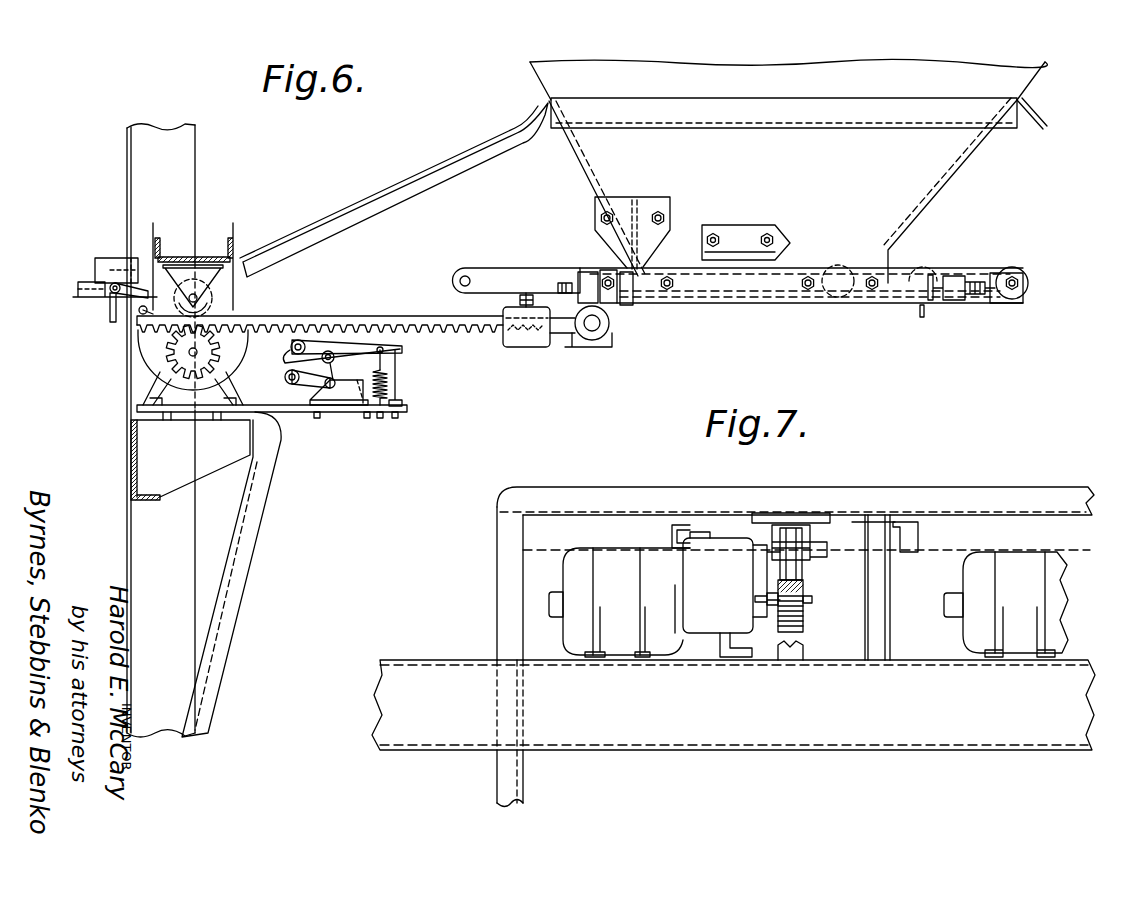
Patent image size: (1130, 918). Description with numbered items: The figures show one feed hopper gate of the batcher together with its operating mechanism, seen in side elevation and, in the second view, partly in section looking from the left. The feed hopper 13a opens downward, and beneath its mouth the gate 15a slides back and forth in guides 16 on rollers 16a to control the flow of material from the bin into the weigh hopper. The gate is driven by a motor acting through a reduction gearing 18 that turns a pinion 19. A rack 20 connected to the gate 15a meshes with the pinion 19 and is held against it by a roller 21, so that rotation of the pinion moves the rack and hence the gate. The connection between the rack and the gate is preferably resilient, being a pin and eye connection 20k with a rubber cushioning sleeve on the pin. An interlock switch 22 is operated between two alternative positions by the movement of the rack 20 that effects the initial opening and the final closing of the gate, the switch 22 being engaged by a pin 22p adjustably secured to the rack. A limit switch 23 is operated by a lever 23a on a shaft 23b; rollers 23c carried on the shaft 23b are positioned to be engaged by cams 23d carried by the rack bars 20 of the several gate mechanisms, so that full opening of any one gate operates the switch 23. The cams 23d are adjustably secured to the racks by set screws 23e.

In FIG. 6, the feed hopper 13a is at (898, 203).
In FIG. 6, the gate 15a is at (897, 305).
In FIG. 7, the gate 15a is at (918, 534).
In FIG. 6, the guides 16 is at (508, 274).
In FIG. 6, the rollers 16a is at (647, 271).
In FIG. 6, the reduction gearing 18 is at (221, 294).
In FIG. 7, the reduction gearing 18 is at (706, 552).
In FIG. 6, the pinion 19 is at (170, 351).
In FIG. 7, the pinion 19 is at (800, 607).
In FIG. 6, the rack 20 is at (336, 330).
In FIG. 7, the rack 20 is at (796, 573).
In FIG. 6, the pin and eye connection 20k is at (612, 326).
In FIG. 6, the roller 21 is at (205, 291).
In FIG. 6, the interlock switch 22 is at (108, 299).
In FIG. 6, the pin 22p is at (141, 312).
In FIG. 6, the limit switch 23 is at (348, 397).
In FIG. 6, the lever 23a is at (285, 377).
In FIG. 6, the shaft 23b is at (400, 352).
In FIG. 6, the rollers 23c is at (291, 347).
In FIG. 6, the cams 23d is at (521, 339).
In FIG. 6, the set screws 23e is at (517, 299).